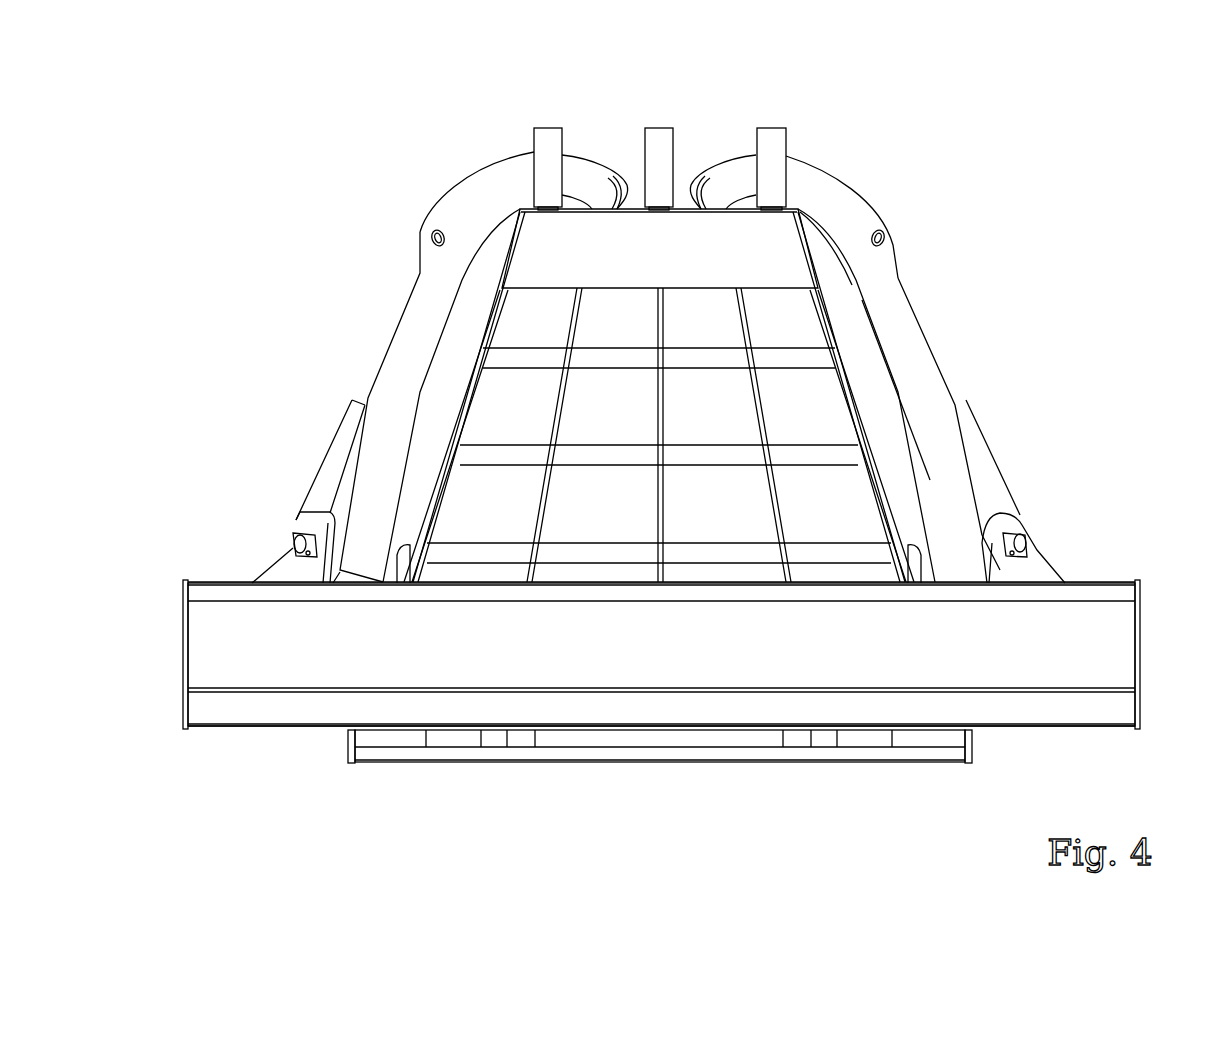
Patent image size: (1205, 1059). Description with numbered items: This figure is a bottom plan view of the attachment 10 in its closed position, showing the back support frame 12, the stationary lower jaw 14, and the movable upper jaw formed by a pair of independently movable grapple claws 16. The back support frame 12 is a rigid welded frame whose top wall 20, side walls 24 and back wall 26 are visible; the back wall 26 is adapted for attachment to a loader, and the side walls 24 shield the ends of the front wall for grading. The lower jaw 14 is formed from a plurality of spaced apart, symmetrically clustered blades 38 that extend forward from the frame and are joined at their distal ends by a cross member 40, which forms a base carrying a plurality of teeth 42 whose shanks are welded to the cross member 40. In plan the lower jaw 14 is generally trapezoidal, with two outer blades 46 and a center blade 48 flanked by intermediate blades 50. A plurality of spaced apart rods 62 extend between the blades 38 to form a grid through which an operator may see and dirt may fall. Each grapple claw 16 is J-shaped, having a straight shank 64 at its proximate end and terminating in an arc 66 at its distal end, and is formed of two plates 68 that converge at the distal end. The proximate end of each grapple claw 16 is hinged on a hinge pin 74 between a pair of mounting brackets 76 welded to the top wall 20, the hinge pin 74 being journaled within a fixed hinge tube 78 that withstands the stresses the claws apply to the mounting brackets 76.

The attachment 10 is at (985, 137).
The back support frame 12 is at (249, 728).
The stationary lower jaw 14 is at (813, 237).
The grapple claw 16 is at (398, 327).
The top wall 20 is at (1082, 665).
The side wall 24 is at (184, 658).
The back wall 26 is at (1098, 716).
The blade 38 is at (551, 428).
The cross member 40 is at (631, 270).
The tooth 42 is at (547, 124).
The outer blade 46 is at (440, 518).
The center blade 48 is at (660, 428).
The intermediate blade 50 is at (545, 505).
The rod 62 is at (684, 347).
The straight shank 64 is at (375, 378).
The arc 66 is at (592, 164).
The plate 68 is at (868, 428).
The hinge pin 74 is at (295, 540).
The mounting bracket 76 is at (918, 570).
The hinge tube 78 is at (1003, 543).